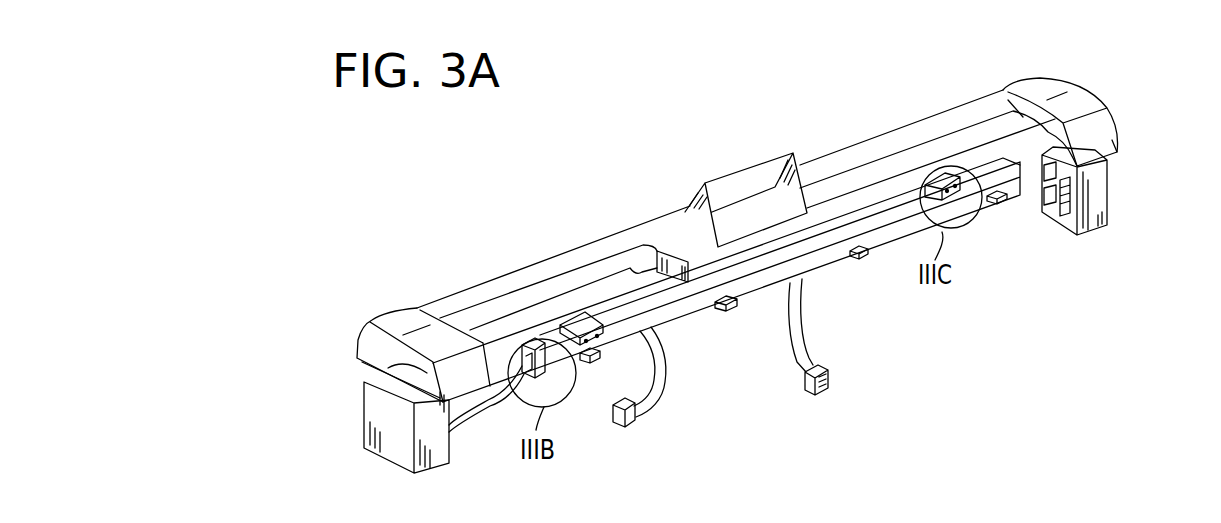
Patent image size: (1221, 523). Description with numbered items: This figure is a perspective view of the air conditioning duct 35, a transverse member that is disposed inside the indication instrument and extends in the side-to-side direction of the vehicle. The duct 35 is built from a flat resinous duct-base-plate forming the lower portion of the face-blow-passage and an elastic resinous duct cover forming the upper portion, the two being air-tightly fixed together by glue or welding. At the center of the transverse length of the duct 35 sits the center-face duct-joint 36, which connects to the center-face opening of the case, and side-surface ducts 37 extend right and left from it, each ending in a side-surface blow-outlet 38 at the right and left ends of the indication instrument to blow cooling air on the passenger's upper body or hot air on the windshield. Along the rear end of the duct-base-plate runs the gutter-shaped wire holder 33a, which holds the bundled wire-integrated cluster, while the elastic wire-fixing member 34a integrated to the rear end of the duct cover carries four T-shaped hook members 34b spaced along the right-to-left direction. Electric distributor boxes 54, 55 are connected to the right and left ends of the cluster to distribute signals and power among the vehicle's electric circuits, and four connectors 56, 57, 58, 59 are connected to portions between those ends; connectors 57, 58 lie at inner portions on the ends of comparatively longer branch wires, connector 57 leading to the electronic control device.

The duct 35 is at (853, 140).
The wire holder 33a is at (810, 263).
The wire-fixing member 34a is at (655, 300).
The T-shaped hook member 34b is at (601, 357).
The center-face duct-joint 36 is at (740, 168).
The side-surface duct 37 is at (473, 295).
The side-surface blow-outlet 38 is at (373, 370).
The electric distributor box 54 is at (385, 428).
The electric distributor box 55 is at (1100, 193).
The connector 56 is at (578, 322).
The connector 57 is at (632, 425).
The connector 58 is at (804, 406).
The connector 59 is at (962, 200).